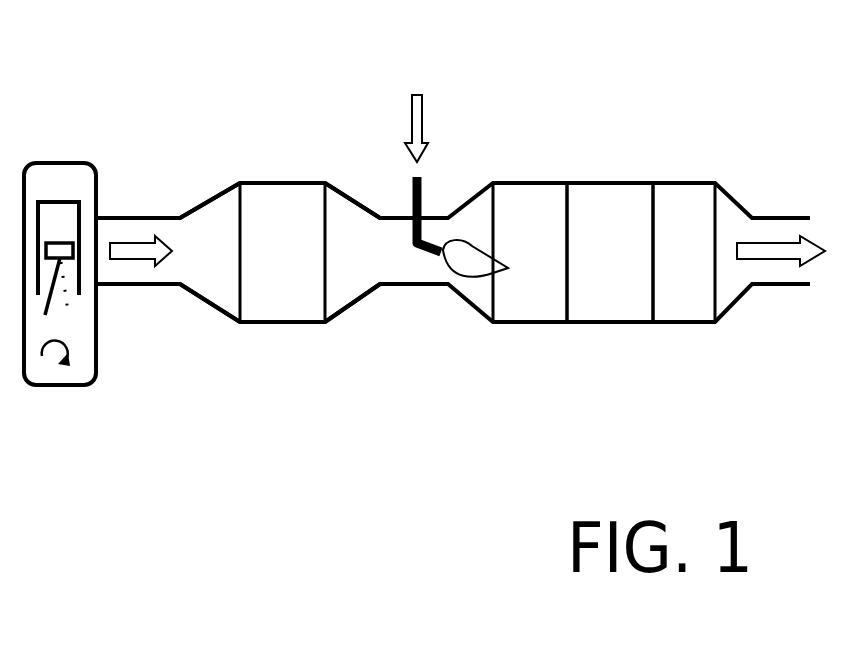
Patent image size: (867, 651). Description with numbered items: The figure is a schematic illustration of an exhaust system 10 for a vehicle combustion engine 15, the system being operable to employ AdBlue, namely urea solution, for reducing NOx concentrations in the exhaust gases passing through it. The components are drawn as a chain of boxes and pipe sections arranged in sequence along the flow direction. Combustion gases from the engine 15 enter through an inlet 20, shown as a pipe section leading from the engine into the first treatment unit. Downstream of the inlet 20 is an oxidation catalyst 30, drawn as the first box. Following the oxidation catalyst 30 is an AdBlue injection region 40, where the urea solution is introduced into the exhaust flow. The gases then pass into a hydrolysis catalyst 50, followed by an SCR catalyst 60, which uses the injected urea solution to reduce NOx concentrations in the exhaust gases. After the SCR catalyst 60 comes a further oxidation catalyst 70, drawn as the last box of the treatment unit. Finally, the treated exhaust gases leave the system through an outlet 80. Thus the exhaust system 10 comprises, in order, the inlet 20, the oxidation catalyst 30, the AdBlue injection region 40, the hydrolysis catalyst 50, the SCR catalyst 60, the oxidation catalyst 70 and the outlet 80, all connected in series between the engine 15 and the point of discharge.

The exhaust system 10 is at (585, 95).
The combustion engine 15 is at (62, 177).
The inlet 20 is at (220, 265).
The oxidation catalyst 30 is at (295, 265).
The AdBlue injection region 40 is at (369, 265).
The hydrolysis catalyst 50 is at (545, 245).
The SCR catalyst 60 is at (622, 245).
The oxidation catalyst 70 is at (698, 245).
The outlet 80 is at (778, 272).